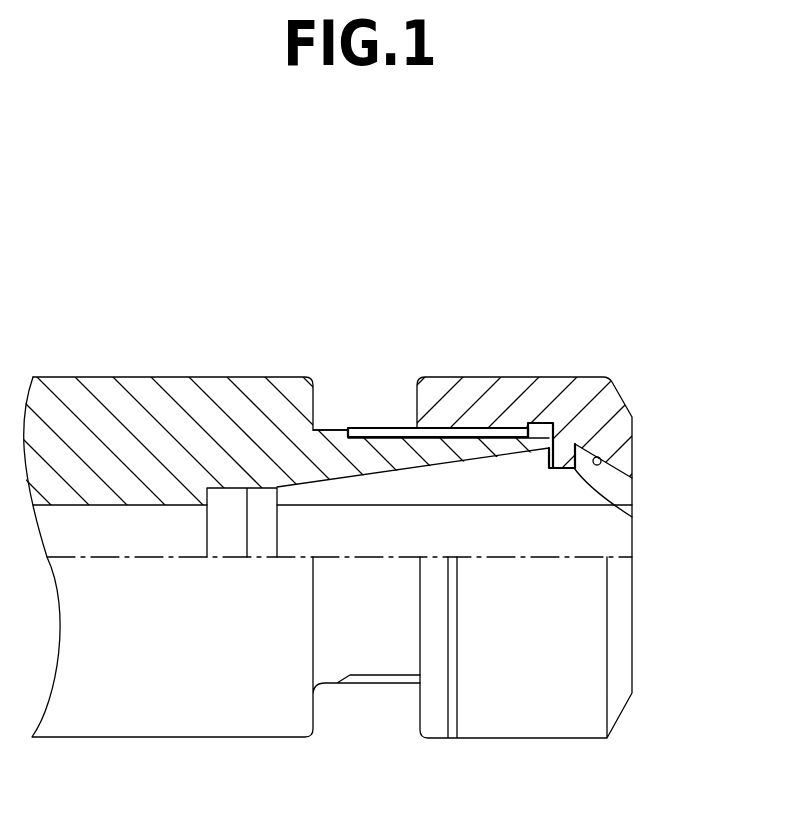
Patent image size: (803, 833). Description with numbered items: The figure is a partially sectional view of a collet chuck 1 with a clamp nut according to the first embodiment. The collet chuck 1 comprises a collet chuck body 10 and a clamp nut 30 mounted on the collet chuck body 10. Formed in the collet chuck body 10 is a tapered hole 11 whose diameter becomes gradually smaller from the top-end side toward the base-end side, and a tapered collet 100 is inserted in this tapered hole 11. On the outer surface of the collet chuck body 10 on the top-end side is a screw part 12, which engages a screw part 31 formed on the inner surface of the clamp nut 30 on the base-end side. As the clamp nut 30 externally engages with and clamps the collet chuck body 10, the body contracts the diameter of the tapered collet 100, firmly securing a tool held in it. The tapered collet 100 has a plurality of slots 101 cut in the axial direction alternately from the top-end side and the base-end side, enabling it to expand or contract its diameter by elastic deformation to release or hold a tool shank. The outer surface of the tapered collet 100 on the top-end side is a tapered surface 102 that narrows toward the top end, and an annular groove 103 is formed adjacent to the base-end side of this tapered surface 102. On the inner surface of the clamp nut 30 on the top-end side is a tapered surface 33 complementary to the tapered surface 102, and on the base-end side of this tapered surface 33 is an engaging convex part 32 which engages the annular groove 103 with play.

The collet chuck 1 is at (545, 225).
The collet chuck body 10 is at (147, 400).
The tapered hole 11 is at (325, 493).
The screw part 12 is at (435, 428).
The clamp nut 30 is at (502, 397).
The screw part 31 is at (471, 432).
The engaging convex part 32 is at (564, 445).
The tapered surface 33 is at (589, 437).
The tapered collet 100 is at (610, 488).
The slots 101 is at (390, 487).
The tapered surface 102 is at (600, 456).
The annular groove 103 is at (632, 517).